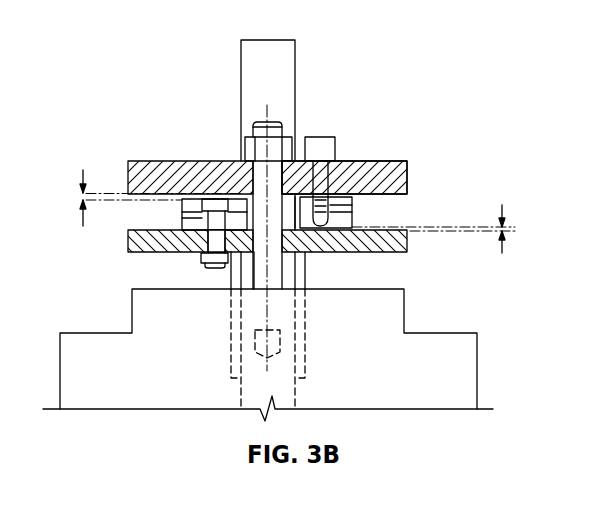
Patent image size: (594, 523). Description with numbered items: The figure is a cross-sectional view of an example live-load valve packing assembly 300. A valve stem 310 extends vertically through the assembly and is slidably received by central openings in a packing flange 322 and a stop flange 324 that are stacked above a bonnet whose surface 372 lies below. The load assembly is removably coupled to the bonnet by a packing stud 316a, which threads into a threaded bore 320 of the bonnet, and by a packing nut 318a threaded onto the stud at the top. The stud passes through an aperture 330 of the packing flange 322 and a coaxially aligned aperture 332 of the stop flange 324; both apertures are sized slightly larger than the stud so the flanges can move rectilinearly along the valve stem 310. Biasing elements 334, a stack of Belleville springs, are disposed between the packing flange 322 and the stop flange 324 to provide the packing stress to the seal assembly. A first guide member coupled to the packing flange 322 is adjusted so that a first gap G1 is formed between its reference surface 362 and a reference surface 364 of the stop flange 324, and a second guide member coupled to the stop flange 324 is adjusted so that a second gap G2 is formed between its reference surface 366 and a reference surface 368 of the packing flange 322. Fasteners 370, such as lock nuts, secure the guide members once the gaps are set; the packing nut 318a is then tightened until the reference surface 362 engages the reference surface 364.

The live-load valve packing assembly 300 is at (146, 52).
The valve stem 310 is at (261, 40).
The packing stud 316a is at (276, 122).
The packing nut 318a is at (289, 136).
The threaded bore 320 is at (255, 340).
The packing flange 322 is at (407, 166).
The stop flange 324 is at (407, 246).
The aperture of the packing flange 330 is at (237, 178).
The aperture of the stop flange 332 is at (228, 238).
The biasing elements 334 is at (347, 215).
The reference surface of the first guide member 362 is at (316, 230).
The reference surface of the stop flange 364 is at (306, 224).
The reference surface of the second guide member 366 is at (185, 204).
The reference surface of the packing flange 368 is at (345, 200).
The fasteners 370 is at (330, 200).
The surface of the bonnet 372 is at (404, 288).
The first gap G1 is at (506, 229).
The second gap G2 is at (78, 193).